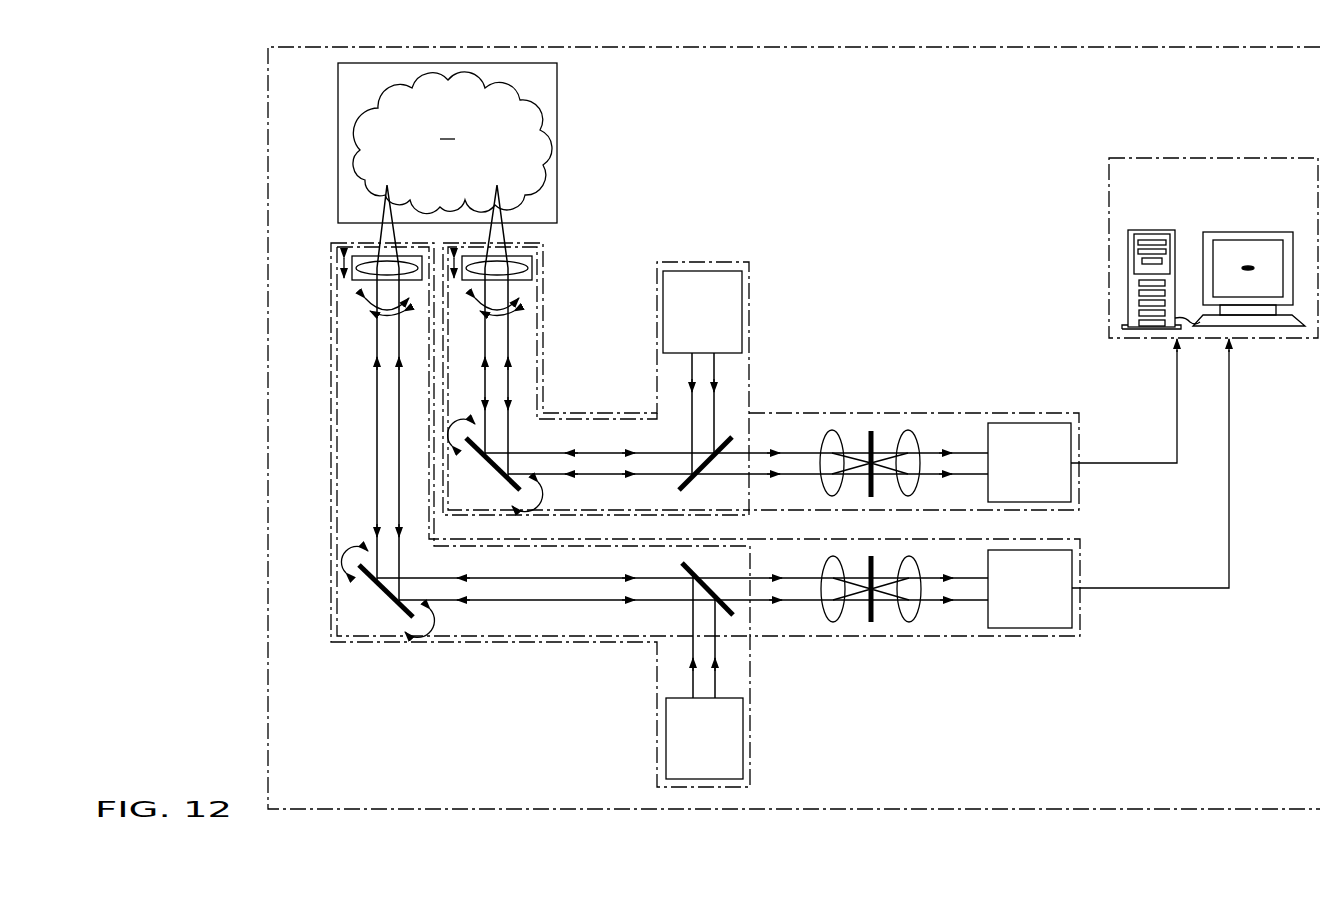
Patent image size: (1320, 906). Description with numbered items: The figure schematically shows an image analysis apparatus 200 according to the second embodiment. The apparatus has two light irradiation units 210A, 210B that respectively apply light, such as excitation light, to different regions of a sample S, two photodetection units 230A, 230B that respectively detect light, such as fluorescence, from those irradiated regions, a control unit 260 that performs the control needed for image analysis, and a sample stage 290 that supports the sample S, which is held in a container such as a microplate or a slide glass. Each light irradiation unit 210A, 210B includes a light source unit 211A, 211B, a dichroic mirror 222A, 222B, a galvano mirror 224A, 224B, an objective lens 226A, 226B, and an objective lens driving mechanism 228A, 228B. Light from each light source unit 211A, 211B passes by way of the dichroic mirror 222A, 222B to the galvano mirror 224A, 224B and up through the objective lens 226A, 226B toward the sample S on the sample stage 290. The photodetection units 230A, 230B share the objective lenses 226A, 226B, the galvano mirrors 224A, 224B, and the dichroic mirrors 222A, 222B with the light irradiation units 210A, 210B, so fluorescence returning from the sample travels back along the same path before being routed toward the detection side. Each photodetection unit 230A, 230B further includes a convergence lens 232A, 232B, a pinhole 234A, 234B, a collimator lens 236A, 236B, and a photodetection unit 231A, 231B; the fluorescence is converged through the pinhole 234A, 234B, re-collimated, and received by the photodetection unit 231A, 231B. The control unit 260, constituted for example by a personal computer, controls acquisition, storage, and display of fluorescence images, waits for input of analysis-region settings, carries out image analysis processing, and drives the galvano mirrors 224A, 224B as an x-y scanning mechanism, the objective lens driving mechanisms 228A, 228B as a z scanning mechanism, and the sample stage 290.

The image analysis apparatus 200 is at (266, 103).
The sample stage 290 is at (557, 125).
The light irradiation unit 210A is at (708, 261).
The light irradiation unit 210B is at (603, 643).
The light source unit 211A is at (743, 305).
The light source unit 211B is at (744, 742).
The dichroic mirror 222A is at (722, 443).
The dichroic mirror 222B is at (727, 618).
The galvano mirror 224A is at (481, 457).
The galvano mirror 224B is at (375, 583).
The objective lens 226A is at (522, 257).
The objective lens 226B is at (365, 257).
The objective lens driving mechanism 228A is at (520, 281).
The objective lens driving mechanism 228B is at (365, 281).
The photodetection unit 230A is at (986, 412).
The photodetection unit 230B is at (986, 637).
The photodetection unit 231A is at (1040, 422).
The photodetection unit 231B is at (1040, 629).
The convergence lens 232A is at (833, 430).
The convergence lens 232B is at (833, 623).
The pinhole 234A is at (871, 430).
The pinhole 234B is at (871, 623).
The collimator lens 236A is at (910, 430).
The collimator lens 236B is at (910, 623).
The control unit 260 is at (1258, 157).